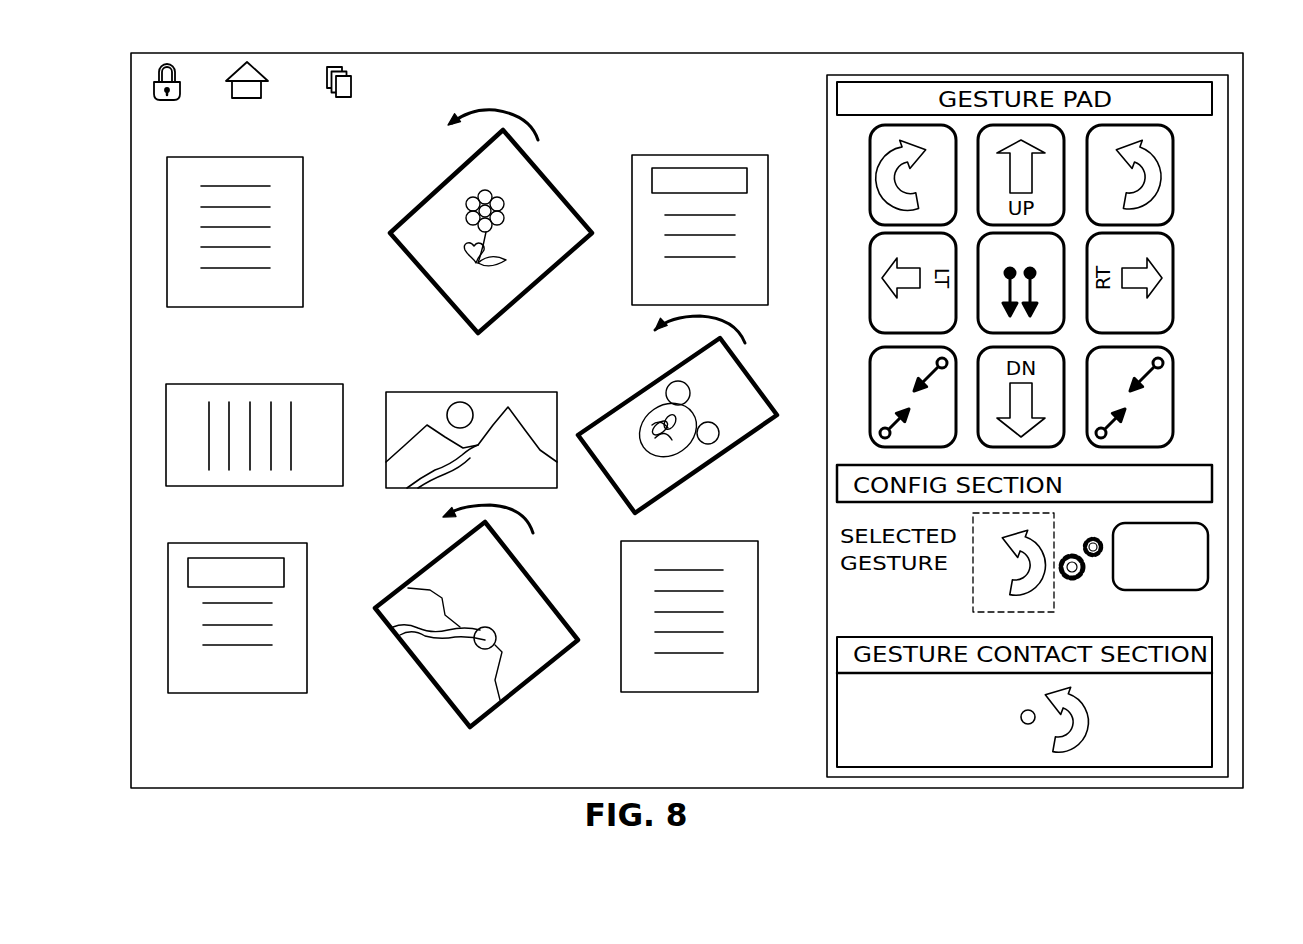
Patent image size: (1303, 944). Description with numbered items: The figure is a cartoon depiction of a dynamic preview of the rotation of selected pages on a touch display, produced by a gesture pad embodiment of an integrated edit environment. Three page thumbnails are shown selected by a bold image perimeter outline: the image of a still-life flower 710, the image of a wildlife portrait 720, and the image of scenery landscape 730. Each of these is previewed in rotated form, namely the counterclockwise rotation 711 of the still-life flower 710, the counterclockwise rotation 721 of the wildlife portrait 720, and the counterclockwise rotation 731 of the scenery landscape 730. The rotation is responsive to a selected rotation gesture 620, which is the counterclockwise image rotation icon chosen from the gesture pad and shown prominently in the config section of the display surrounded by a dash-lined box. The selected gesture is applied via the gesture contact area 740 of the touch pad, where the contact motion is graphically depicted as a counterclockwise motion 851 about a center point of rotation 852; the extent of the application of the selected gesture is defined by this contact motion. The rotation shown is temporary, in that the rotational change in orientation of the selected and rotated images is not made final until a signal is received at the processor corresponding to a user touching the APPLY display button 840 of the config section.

The image of a still-life flower 710 is at (438, 297).
The counterclockwise rotation of the image of the still-life flower 711 is at (502, 112).
The image of wildlife in sideways portrait 720 is at (728, 450).
The counterclockwise rotation of the image of the wildlife portrait 721 is at (662, 330).
The image of scenery landscape 730 is at (545, 670).
The counterclockwise rotation of the image of scenery landscape 731 is at (520, 505).
The selected rotation gesture 620 is at (973, 583).
The APPLY display button 840 is at (1208, 568).
The counterclockwise motion 851 is at (1087, 708).
The center point of rotation 852 is at (1020, 717).
The gesture contact area 740 is at (1178, 803).